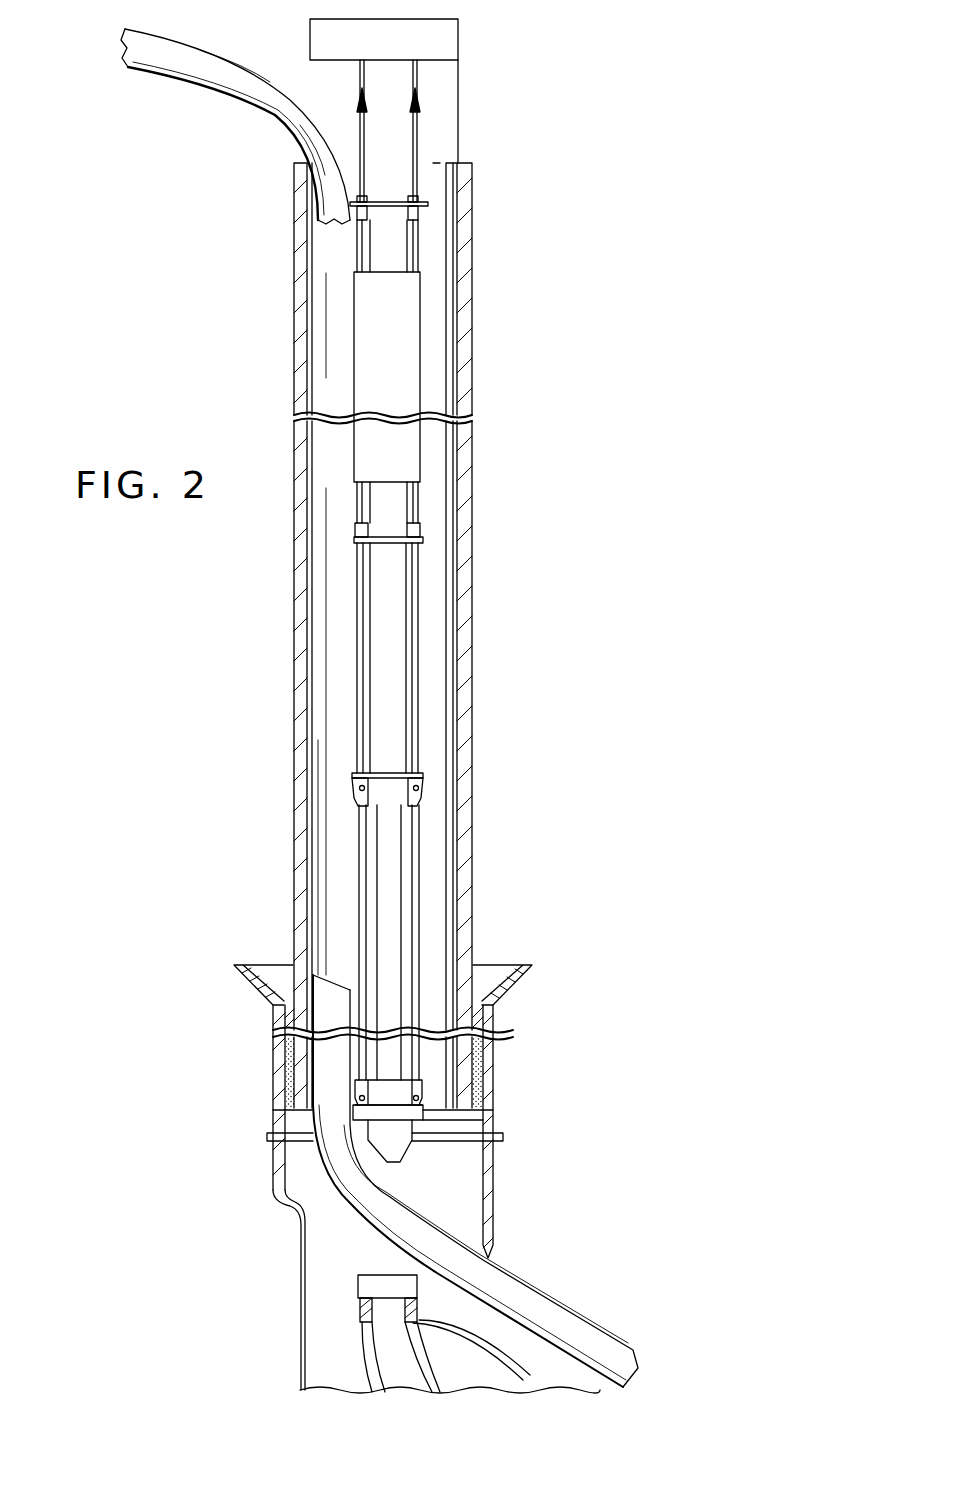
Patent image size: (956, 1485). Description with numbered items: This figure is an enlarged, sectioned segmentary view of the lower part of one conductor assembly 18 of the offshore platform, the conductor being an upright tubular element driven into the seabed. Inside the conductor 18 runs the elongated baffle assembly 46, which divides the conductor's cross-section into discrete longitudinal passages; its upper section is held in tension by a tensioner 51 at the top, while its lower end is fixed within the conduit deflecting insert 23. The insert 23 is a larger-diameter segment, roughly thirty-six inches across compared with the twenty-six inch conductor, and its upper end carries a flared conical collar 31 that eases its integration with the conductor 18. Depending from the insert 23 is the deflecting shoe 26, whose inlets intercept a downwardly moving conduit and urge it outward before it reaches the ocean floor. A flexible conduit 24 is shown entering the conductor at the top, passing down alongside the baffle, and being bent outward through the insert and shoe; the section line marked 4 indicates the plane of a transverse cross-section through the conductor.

The conductor assembly 18 is at (465, 602).
The tensioner 51 is at (445, 46).
The baffle assembly 46 is at (430, 371).
The flared conical collar 31 is at (532, 972).
The conduit deflecting insert 23 is at (505, 1067).
The deflecting shoe 26 is at (353, 1242).
The conduits and lines 24 is at (128, 63).
The section line 4- 4 is at (232, 190).